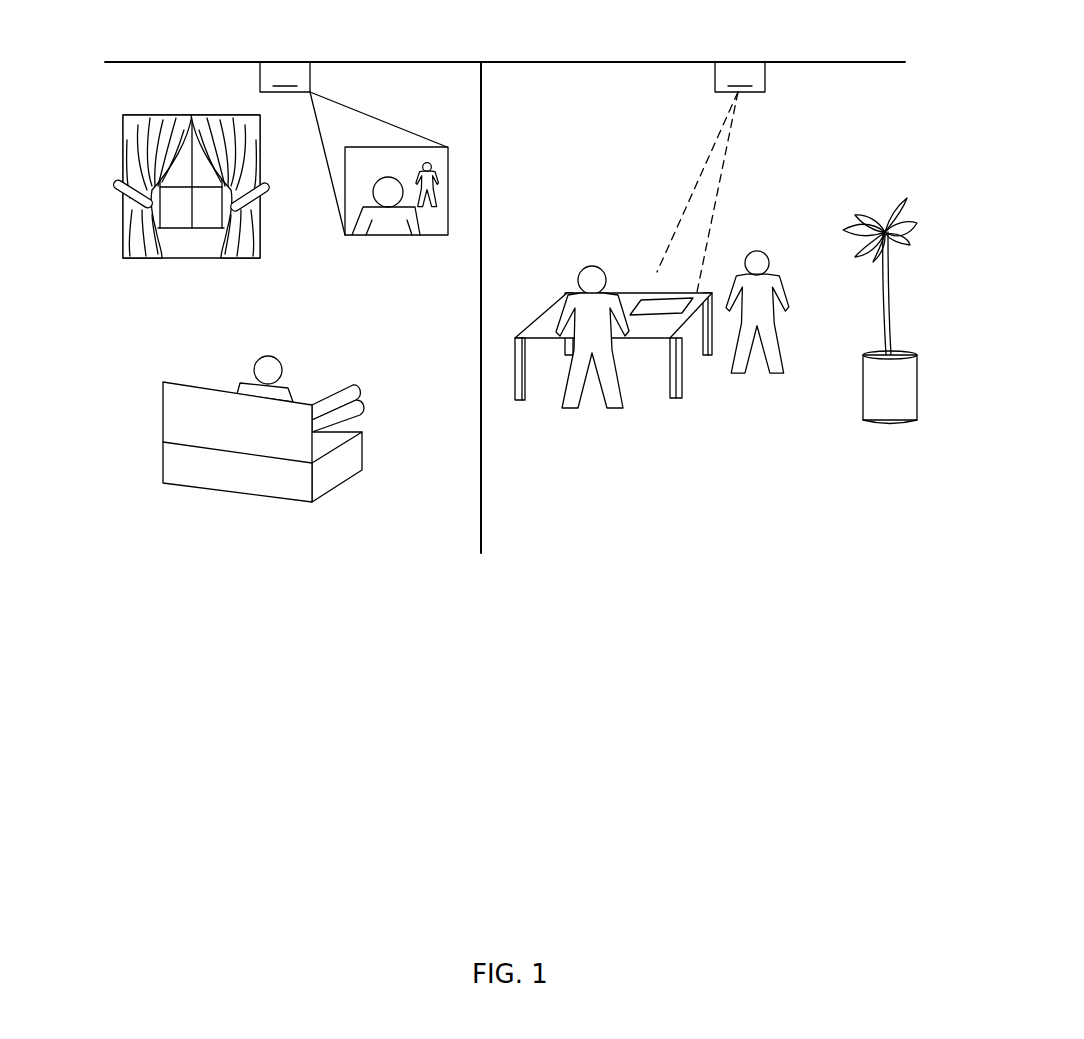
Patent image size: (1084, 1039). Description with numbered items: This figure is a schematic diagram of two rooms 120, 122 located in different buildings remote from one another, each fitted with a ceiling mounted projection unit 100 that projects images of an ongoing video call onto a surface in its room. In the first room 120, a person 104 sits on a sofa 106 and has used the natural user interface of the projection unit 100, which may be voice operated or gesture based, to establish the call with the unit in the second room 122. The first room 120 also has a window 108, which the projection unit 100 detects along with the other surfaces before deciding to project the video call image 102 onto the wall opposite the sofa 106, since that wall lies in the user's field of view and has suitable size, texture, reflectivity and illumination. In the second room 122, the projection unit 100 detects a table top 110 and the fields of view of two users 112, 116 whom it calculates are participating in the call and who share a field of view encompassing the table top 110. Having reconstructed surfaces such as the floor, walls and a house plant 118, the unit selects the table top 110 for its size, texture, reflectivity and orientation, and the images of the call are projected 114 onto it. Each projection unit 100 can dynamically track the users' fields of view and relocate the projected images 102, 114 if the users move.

The projection unit 100 is at (512, 177).
The video call image 102 is at (387, 235).
The person 104 is at (283, 363).
The sofa 106 is at (237, 493).
The window 108 is at (165, 220).
The table top 110 is at (548, 318).
The user 112 is at (587, 273).
The projected images 114 is at (670, 302).
The user 116 is at (772, 278).
The house plant 118 is at (868, 402).
The first room 120 is at (395, 62).
The second room 122 is at (817, 62).